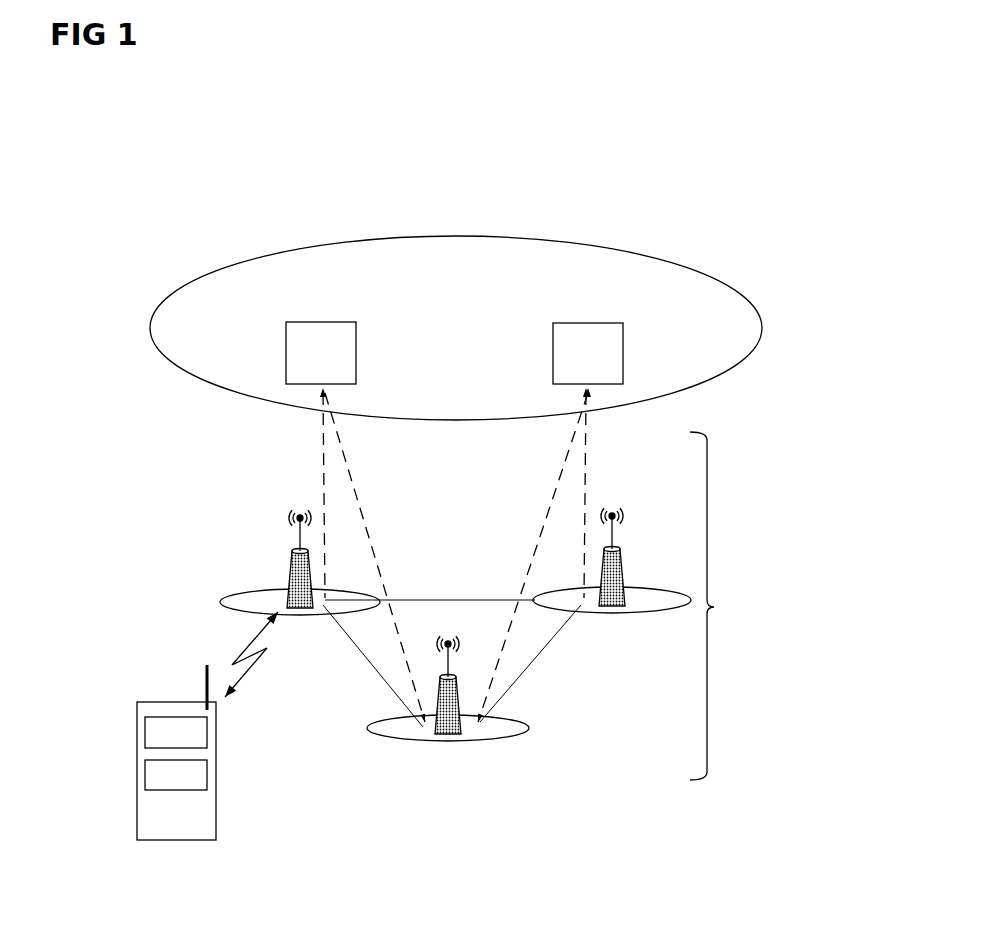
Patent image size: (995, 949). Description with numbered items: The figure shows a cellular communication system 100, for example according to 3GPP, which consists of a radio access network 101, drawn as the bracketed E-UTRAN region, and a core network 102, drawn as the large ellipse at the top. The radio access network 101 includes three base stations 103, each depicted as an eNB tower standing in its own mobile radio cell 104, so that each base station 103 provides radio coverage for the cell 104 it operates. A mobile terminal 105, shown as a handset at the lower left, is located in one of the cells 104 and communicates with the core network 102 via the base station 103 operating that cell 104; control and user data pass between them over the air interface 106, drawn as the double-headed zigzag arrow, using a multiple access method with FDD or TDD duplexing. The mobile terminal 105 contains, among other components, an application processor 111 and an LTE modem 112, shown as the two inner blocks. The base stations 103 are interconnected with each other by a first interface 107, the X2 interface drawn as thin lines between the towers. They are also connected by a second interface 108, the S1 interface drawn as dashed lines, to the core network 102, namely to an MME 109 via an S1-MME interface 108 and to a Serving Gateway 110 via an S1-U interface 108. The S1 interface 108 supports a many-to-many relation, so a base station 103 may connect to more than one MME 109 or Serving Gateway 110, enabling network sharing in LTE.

The communication system 100 is at (737, 170).
The radio access network 101 is at (795, 580).
The core network 102 is at (750, 297).
The base station 103 is at (290, 568).
The mobile radio cell 104 is at (235, 603).
The mobile terminal 105 is at (168, 841).
The air interface 106 is at (263, 650).
The first interface 107 is at (458, 600).
The second interface 108 is at (323, 445).
The MME 109 is at (320, 322).
The Serving Gateway 110 is at (587, 322).
The application processor 111 is at (143, 772).
The LTE modem 112 is at (143, 725).